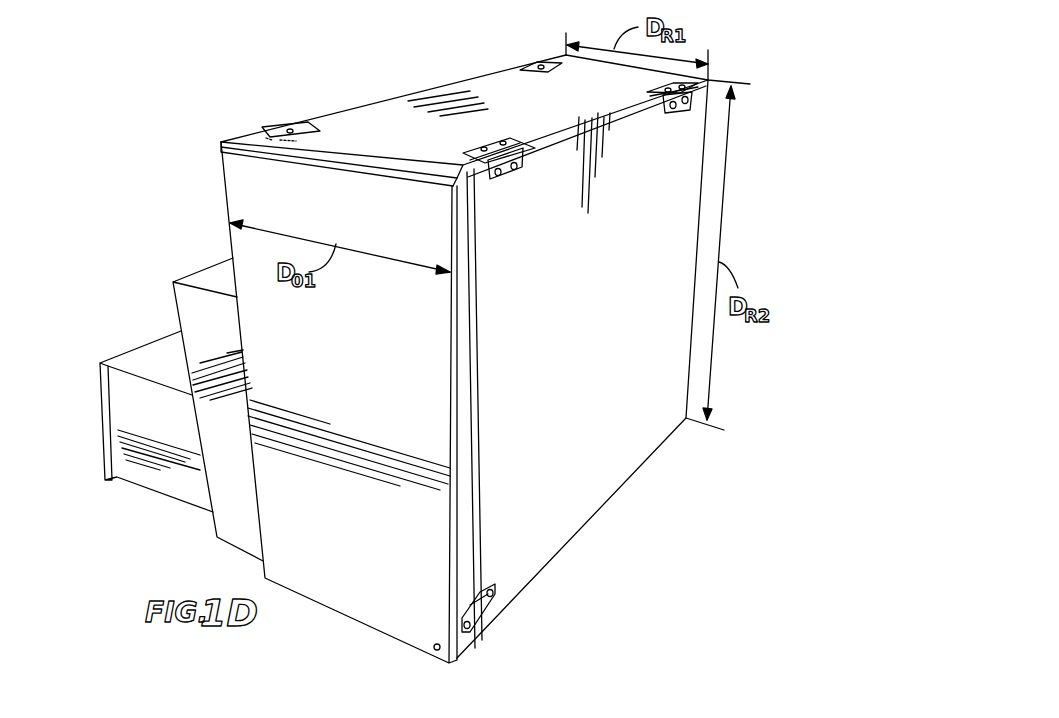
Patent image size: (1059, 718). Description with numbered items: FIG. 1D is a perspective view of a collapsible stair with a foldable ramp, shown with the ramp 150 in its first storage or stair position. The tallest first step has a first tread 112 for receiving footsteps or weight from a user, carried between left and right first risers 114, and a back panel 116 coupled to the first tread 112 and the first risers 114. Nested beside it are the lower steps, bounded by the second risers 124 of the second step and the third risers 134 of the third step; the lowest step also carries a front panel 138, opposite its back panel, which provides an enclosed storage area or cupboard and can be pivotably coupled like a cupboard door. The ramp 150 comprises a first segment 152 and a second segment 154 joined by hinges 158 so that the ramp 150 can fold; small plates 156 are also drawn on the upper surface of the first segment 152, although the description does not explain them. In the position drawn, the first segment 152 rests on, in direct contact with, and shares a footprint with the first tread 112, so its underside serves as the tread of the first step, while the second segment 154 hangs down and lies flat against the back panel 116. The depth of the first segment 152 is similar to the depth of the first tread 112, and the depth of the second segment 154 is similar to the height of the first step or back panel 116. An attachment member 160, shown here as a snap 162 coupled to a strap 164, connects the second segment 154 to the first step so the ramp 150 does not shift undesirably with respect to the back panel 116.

The first tread 112 is at (435, 178).
The first risers 114 is at (356, 371).
The back panel 116 is at (469, 378).
The second risers 124 is at (233, 345).
The third risers 134 is at (163, 425).
The front panel 138 is at (96, 430).
The ramp 150 is at (647, 466).
The first segment 152 is at (541, 110).
The second segment 154 is at (586, 341).
The mounting plate 156 is at (283, 128).
The hinges 158 is at (495, 150).
The attachment member 160 is at (456, 607).
The snap 162 is at (475, 623).
The strap 164 is at (473, 612).